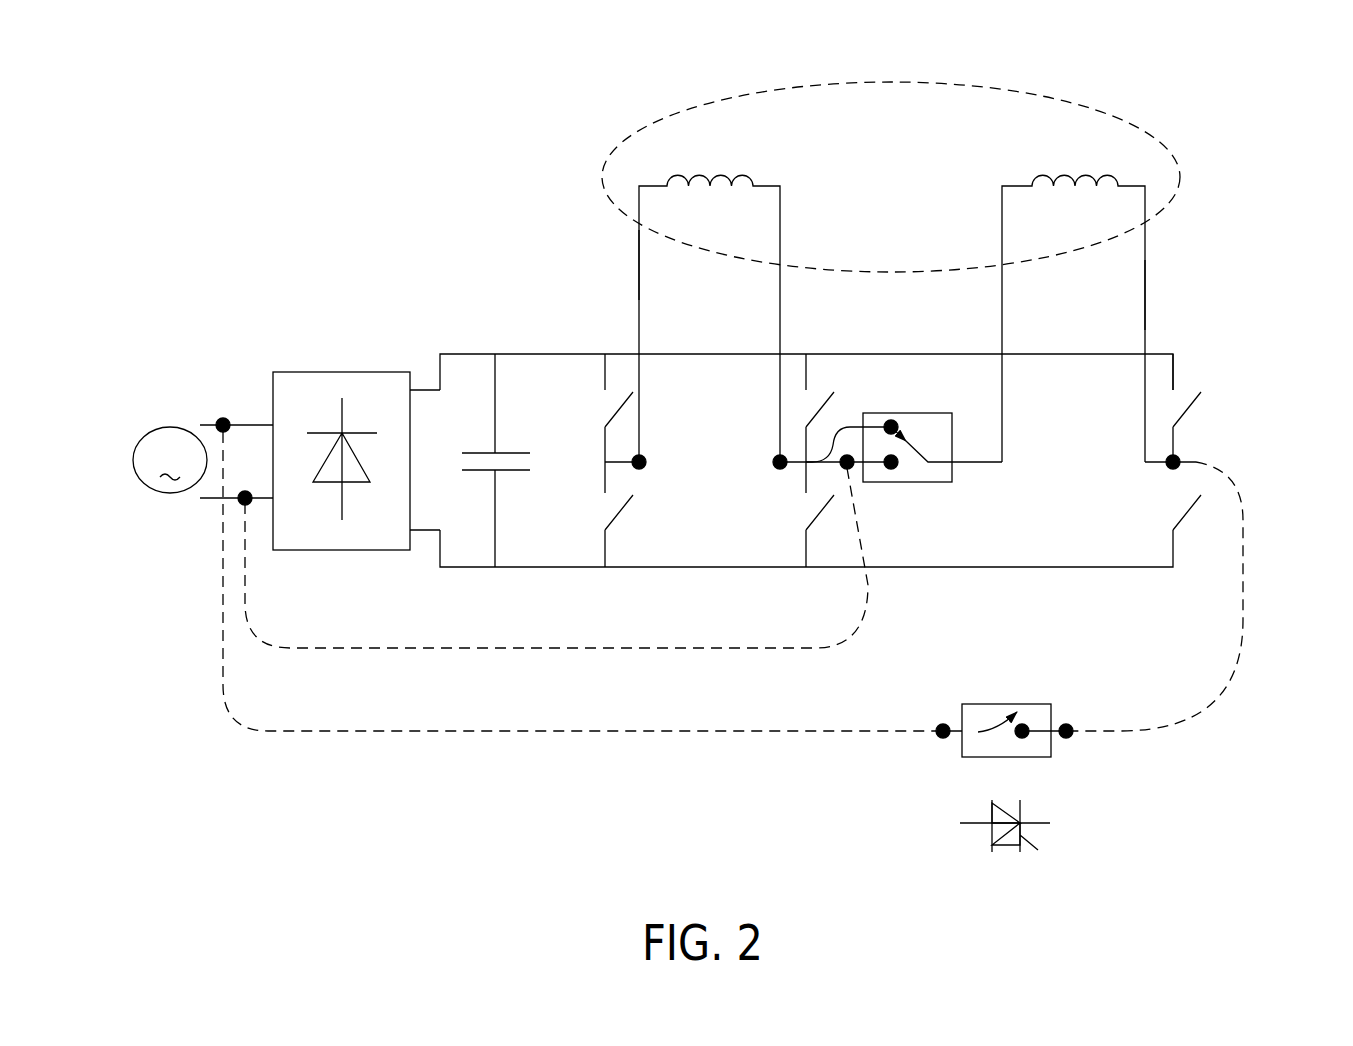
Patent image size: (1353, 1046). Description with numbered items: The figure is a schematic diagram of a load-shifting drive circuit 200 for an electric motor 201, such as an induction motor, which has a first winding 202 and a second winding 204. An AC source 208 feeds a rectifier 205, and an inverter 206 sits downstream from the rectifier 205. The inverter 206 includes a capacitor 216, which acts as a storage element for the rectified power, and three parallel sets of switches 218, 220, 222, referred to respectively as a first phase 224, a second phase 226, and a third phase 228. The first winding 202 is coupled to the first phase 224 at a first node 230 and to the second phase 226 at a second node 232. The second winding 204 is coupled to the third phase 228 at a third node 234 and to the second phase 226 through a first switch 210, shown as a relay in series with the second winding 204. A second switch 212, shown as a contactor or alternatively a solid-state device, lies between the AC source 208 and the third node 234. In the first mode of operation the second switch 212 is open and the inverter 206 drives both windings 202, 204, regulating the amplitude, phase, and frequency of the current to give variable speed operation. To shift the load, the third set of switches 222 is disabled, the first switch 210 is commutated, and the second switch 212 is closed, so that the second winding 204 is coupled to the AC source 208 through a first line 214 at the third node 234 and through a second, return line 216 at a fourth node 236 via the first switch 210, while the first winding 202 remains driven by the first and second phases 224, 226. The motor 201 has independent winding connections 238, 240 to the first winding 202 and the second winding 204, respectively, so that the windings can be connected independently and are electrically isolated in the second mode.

The load-shifting drive circuit 200 is at (389, 160).
The electric motor 201 is at (705, 97).
The first winding 202 is at (727, 215).
The second winding 204 is at (1091, 215).
The rectifier 205 is at (383, 372).
The inverter 206 is at (1215, 430).
The AC source 208 is at (156, 400).
The first switch 210 is at (887, 400).
The second switch 212 is at (928, 779).
The first line L1 214 is at (249, 425).
The capacitor 216 is at (200, 500).
The first set of switches 218 is at (553, 418).
The second set of switches 220 is at (784, 498).
The third set of switches 222 is at (1122, 517).
The first phase 224 is at (601, 338).
The second phase 226 is at (802, 582).
The third phase 228 is at (1169, 582).
The first node 230 is at (642, 463).
The second node 232 is at (776, 459).
The third node 234 is at (1170, 466).
The fourth node 236 is at (850, 467).
The first winding connection 238 is at (622, 243).
The second winding connection 240 is at (1178, 304).